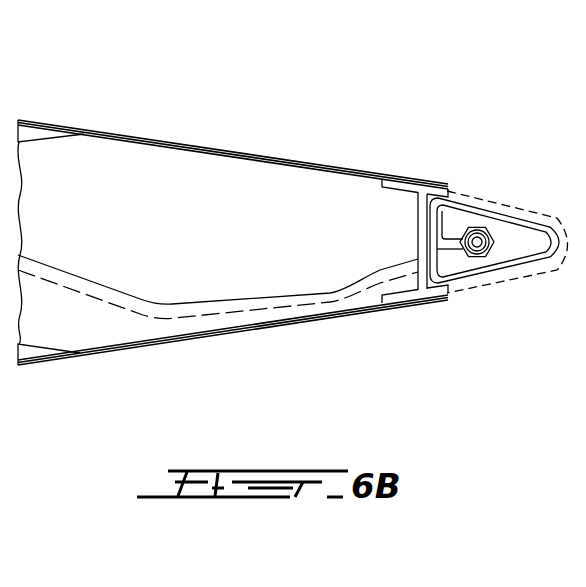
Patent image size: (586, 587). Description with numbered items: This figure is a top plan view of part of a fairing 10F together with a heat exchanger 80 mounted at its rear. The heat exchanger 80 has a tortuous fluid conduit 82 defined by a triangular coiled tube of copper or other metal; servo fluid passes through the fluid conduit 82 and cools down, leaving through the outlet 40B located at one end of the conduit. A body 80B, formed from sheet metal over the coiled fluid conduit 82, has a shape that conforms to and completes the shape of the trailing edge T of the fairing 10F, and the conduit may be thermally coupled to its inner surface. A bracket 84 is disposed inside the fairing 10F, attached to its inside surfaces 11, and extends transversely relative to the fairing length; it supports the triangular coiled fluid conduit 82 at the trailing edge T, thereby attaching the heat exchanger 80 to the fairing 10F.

The fairing 10F is at (258, 151).
The inside surfaces 11 is at (88, 351).
The trailing edge T is at (413, 178).
The bracket 84 is at (401, 299).
The heat exchanger 80 is at (499, 248).
The tortuous fluid conduit 82 is at (463, 275).
The outlet 40B is at (477, 226).
The body 80B is at (500, 196).